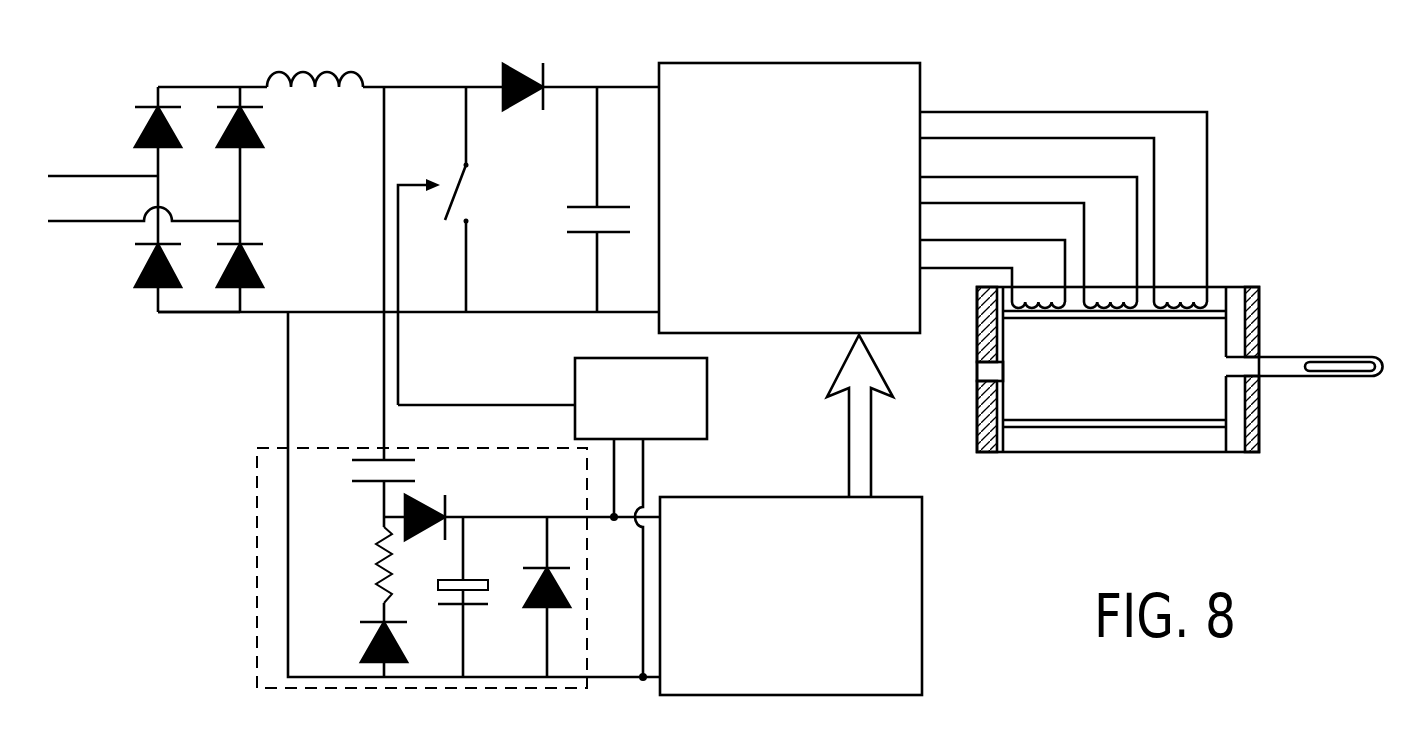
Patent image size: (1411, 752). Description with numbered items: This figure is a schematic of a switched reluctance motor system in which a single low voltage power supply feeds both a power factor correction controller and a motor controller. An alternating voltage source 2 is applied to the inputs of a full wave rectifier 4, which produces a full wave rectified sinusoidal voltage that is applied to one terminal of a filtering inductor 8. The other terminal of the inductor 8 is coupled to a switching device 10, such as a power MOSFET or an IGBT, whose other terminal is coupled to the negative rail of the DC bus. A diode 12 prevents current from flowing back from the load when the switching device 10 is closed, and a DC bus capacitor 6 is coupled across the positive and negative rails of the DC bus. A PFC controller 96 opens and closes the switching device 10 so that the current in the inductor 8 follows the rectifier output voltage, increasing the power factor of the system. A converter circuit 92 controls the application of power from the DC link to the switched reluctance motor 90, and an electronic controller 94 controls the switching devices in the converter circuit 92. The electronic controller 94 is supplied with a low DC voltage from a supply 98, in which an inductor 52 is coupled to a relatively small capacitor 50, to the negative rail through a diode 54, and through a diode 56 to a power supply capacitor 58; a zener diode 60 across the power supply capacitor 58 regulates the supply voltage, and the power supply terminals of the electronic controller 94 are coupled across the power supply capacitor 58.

The AC power source input 2 is at (60, 203).
The full wave rectifier 4 is at (192, 330).
The DC bus capacitor 6 is at (572, 220).
The filtering inductor 8 is at (318, 70).
The switching device 10 is at (467, 197).
The diode 12 is at (548, 67).
The capacitor 50 is at (355, 465).
The inductor 52 is at (378, 555).
The diode 54 is at (363, 657).
The diode 56 is at (422, 502).
The power supply capacitor 58 is at (468, 578).
The zener diode 60 is at (540, 608).
The switched reluctance motor 90 is at (1137, 458).
The converter circuit 92 is at (785, 63).
The electronic controller 94 is at (922, 580).
The PFC controller 96 is at (707, 428).
The supply 98 is at (257, 590).